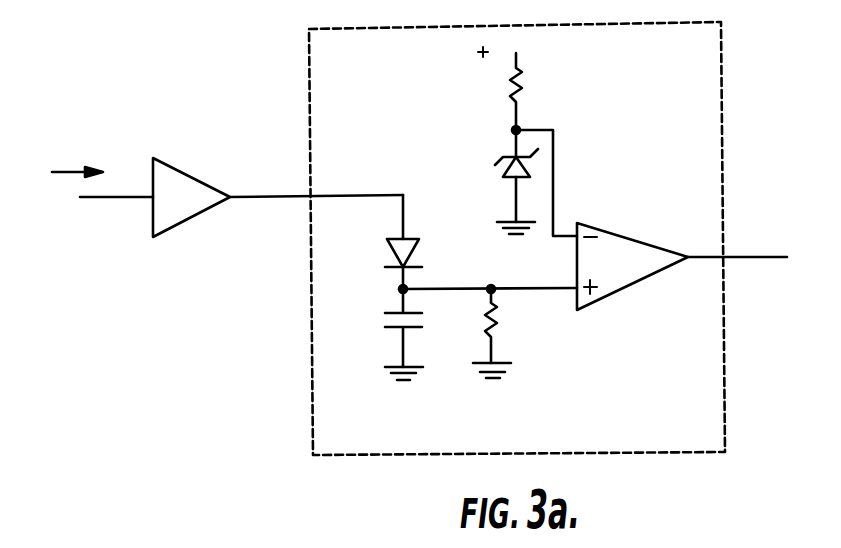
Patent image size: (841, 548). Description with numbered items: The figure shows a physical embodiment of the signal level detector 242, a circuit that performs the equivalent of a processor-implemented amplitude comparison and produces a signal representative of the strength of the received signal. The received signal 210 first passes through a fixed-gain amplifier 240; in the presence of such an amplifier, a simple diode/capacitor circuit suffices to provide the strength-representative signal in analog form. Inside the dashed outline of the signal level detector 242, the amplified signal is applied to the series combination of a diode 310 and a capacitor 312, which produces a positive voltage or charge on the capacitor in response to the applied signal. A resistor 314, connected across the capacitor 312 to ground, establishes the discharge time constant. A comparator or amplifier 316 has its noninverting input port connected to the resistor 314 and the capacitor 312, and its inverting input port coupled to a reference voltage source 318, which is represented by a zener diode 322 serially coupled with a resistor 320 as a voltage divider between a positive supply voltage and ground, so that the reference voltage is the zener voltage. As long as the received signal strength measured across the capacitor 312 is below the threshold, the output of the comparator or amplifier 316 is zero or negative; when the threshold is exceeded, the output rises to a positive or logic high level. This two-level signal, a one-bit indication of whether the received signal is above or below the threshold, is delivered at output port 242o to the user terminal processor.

The received signal 210 is at (70, 172).
The fixed-gain amplifier 240 is at (185, 172).
The signal level detector 242 is at (312, 360).
The output port 242o is at (770, 257).
The reference voltage source 318 is at (442, 123).
The resistor 320 is at (522, 98).
The zener diode 322 is at (516, 195).
The diode 310 is at (397, 239).
The capacitor 312 is at (395, 328).
The resistor 314 is at (498, 333).
The comparator or amplifier 316 is at (637, 238).